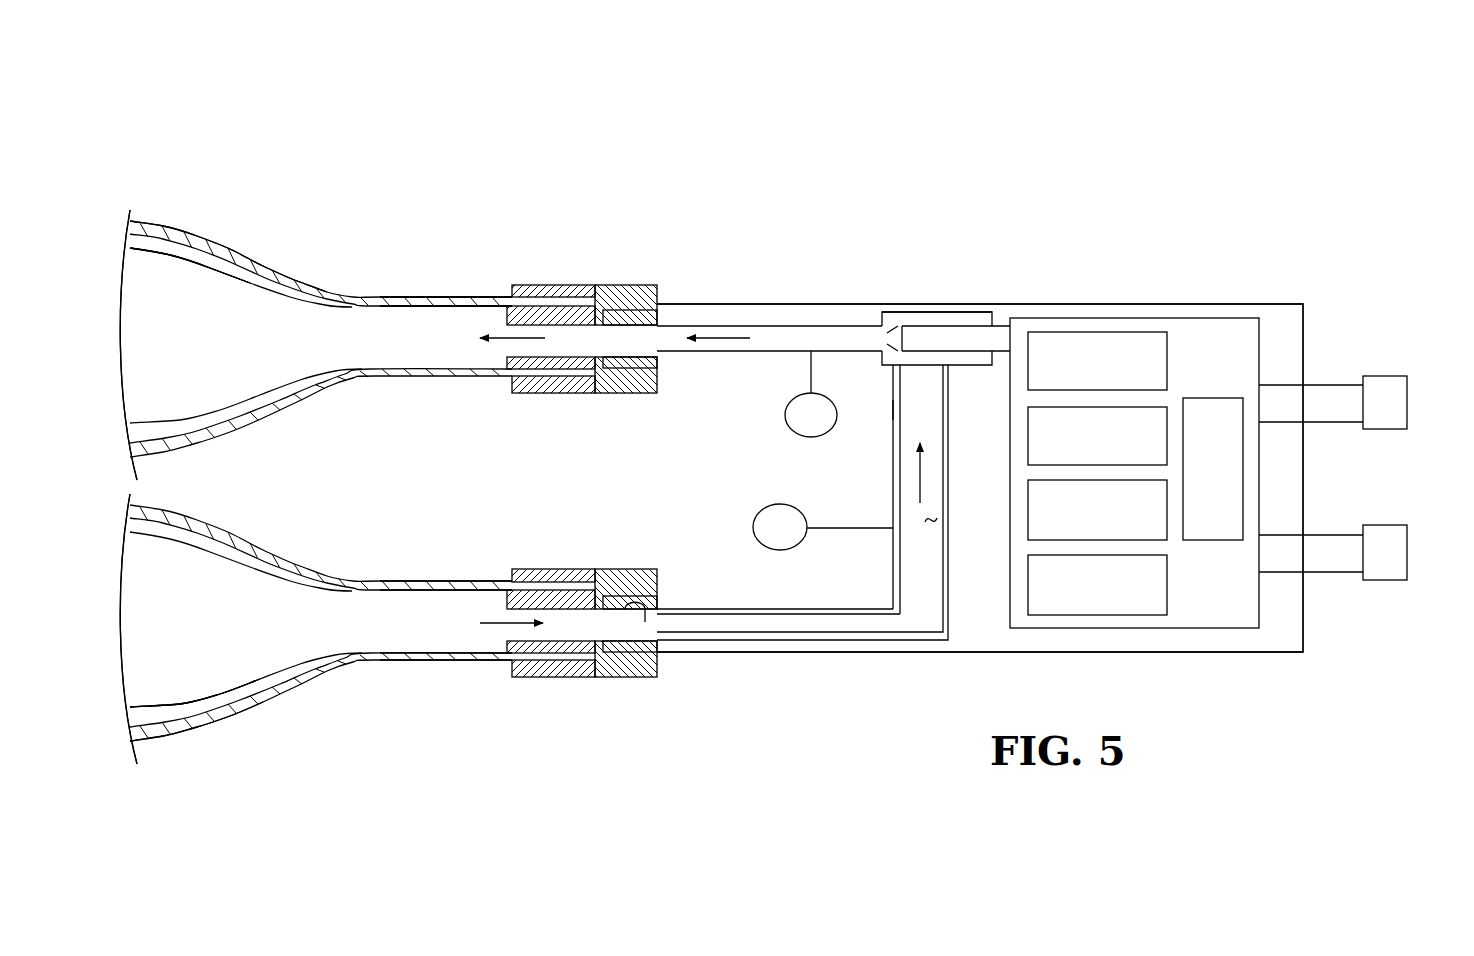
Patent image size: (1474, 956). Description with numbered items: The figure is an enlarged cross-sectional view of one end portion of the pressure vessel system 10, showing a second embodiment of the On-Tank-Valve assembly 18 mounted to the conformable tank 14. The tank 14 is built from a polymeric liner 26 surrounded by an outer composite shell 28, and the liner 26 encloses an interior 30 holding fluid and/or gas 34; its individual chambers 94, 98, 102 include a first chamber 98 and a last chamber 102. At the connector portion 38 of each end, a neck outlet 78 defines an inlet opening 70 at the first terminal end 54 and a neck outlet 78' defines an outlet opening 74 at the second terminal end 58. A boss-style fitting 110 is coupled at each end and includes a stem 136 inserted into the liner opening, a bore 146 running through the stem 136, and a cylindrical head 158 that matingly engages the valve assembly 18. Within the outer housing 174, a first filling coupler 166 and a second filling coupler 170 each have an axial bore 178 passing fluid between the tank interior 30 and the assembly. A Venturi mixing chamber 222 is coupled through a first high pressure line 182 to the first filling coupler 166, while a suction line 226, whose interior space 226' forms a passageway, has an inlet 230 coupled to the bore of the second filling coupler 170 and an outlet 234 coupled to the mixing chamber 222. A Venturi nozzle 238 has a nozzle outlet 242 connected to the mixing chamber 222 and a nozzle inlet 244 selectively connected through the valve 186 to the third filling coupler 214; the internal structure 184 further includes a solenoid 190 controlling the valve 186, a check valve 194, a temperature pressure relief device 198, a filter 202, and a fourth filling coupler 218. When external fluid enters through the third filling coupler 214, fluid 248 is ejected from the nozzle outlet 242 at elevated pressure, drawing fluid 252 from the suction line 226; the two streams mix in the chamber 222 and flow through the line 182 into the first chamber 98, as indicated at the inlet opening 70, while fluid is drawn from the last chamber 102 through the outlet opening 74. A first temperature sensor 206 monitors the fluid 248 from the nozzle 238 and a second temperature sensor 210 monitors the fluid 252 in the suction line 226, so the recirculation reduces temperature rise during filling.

The system 10 is at (1124, 162).
The conformable tank 14 is at (211, 193).
The On-Tank-Valve assembly 18 is at (936, 270).
The polymeric liner 26 is at (178, 243).
The outer composite shell 28 is at (284, 255).
The interior 30 is at (189, 292).
The fluid and/or gas 34 is at (193, 497).
The connector portion 38 is at (504, 296).
The first terminal end 54 is at (604, 395).
The second terminal end 58 is at (600, 578).
The inlet opening 70 is at (502, 330).
The outlet opening 74 is at (495, 626).
The neck outlet 78 is at (446, 301).
The neck outlet 78' is at (446, 656).
The chamber 94 is at (226, 291).
The first chamber 98 is at (190, 265).
The last chamber 102 is at (195, 693).
The fitting 110 is at (635, 685).
The stem 136 is at (505, 597).
The bore 146 is at (584, 642).
The head 158 is at (604, 680).
The first filling coupler 166 is at (642, 325).
The second filling coupler 170 is at (660, 623).
The outer housing 174 is at (1230, 302).
The bore 178 is at (657, 318).
The first high pressure line 182 is at (627, 393).
The internal structure 184 is at (1077, 316).
The valve 186 is at (1213, 469).
The solenoid 190 is at (1097, 361).
The check valve 194 is at (1097, 510).
The temperature pressure relief device 198 is at (1097, 585).
The filter 202 is at (1097, 436).
The first temperature sensor 206 is at (838, 398).
The second temperature sensor 210 is at (800, 556).
The third filling coupler 214 is at (1383, 375).
The fourth filling coupler 218 is at (1383, 582).
The Venturi mixing chamber 222 is at (932, 316).
The suction line 226 is at (843, 489).
The interior space 226' is at (826, 530).
The inlet 230 is at (672, 621).
The outlet 234 is at (896, 404).
The Venturi nozzle 238 is at (951, 316).
The nozzle outlet 242 is at (899, 314).
The nozzle inlet 244 is at (979, 314).
The fluid from Venturi nozzle 248 is at (722, 336).
The fluid through suction line 252 is at (920, 476).